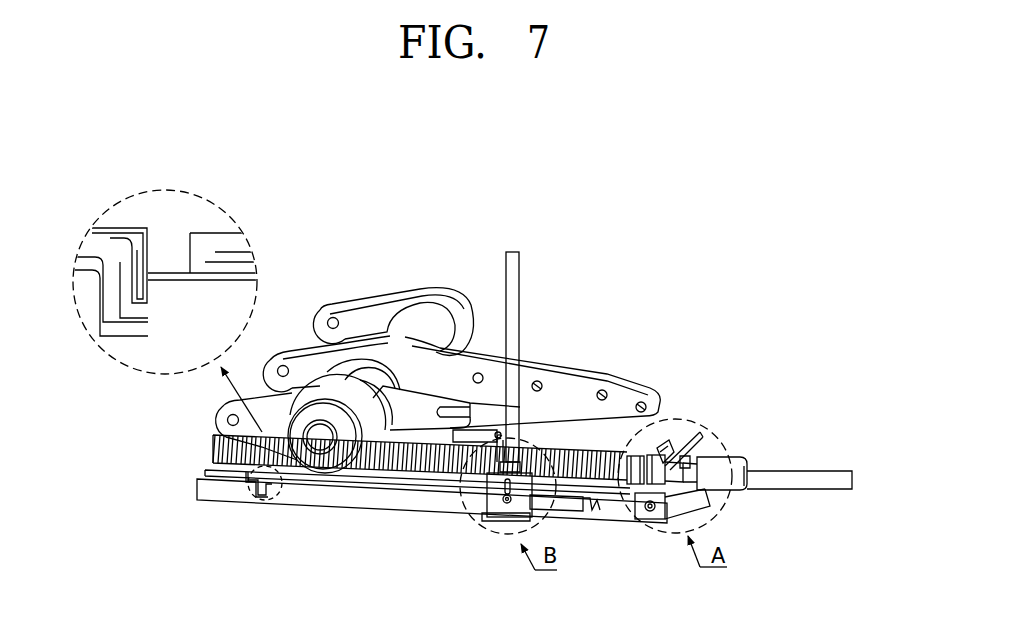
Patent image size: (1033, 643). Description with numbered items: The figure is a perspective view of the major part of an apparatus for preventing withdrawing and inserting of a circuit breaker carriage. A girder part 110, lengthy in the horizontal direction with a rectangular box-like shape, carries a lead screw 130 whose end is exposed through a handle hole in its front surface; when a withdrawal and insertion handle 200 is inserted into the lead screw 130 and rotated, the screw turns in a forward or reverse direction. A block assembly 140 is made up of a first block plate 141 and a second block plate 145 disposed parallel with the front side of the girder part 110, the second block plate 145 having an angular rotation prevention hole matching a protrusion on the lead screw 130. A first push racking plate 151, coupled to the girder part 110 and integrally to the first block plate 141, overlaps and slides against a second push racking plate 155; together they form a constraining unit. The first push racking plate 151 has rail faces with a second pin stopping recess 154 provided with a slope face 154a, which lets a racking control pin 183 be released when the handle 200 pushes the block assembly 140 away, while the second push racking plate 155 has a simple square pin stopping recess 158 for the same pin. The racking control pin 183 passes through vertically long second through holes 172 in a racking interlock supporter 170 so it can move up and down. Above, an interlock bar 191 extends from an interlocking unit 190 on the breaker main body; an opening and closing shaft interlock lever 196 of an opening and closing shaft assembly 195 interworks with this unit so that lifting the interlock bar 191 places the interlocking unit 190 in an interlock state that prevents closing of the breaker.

The girder part 110 is at (678, 510).
The lead screw 130 is at (435, 472).
The block assembly 140 is at (783, 390).
The first block plate 141 is at (700, 452).
The second block plate 145 is at (675, 443).
The first push racking plate 151 is at (602, 503).
The second pin stopping recess 154 is at (130, 300).
The slope face 154a is at (207, 267).
The second push racking plate 155 is at (610, 517).
The pin stopping recess 158 is at (147, 332).
The racking interlock supporter 170 is at (492, 495).
The second through holes 172 is at (503, 497).
The racking control pin 183 is at (506, 504).
The interlocking unit 190 is at (386, 287).
The interlock bar 191 is at (521, 282).
The opening and closing shaft assembly 195 is at (320, 460).
The opening and closing shaft interlock lever 196 is at (415, 425).
The withdrawal and insertion handle 200 is at (718, 463).